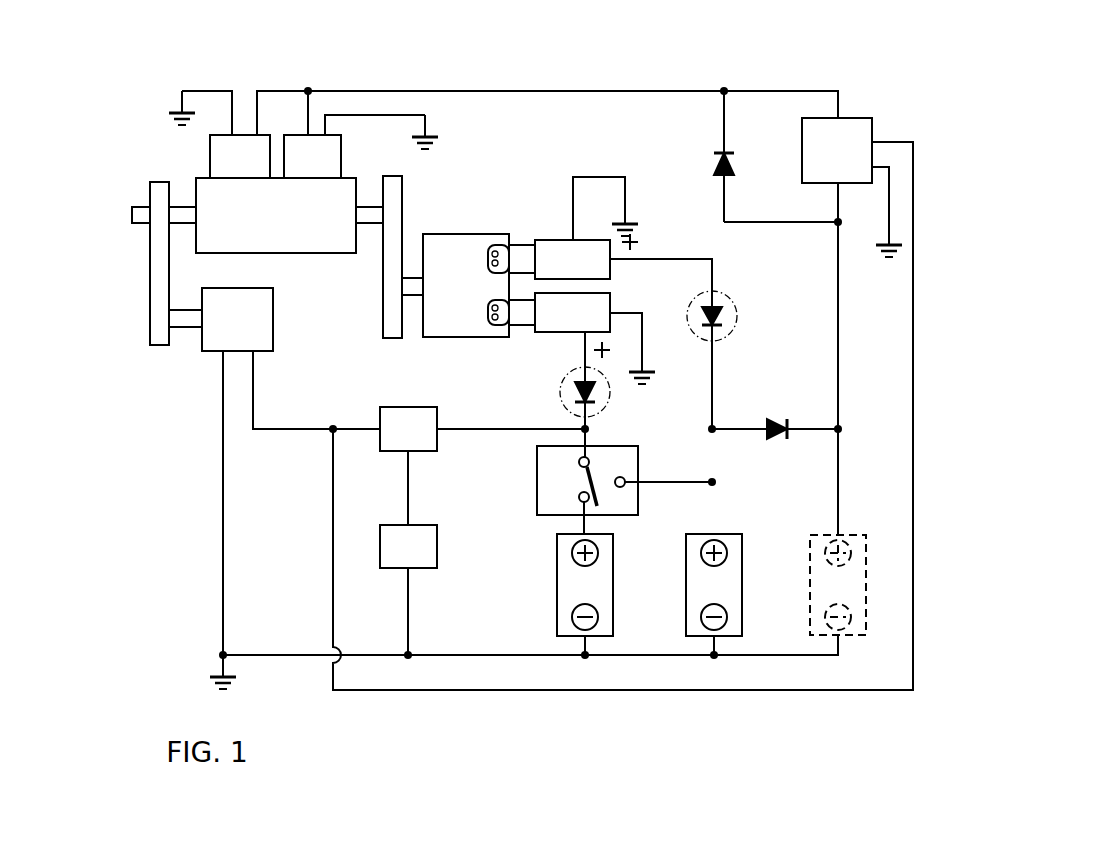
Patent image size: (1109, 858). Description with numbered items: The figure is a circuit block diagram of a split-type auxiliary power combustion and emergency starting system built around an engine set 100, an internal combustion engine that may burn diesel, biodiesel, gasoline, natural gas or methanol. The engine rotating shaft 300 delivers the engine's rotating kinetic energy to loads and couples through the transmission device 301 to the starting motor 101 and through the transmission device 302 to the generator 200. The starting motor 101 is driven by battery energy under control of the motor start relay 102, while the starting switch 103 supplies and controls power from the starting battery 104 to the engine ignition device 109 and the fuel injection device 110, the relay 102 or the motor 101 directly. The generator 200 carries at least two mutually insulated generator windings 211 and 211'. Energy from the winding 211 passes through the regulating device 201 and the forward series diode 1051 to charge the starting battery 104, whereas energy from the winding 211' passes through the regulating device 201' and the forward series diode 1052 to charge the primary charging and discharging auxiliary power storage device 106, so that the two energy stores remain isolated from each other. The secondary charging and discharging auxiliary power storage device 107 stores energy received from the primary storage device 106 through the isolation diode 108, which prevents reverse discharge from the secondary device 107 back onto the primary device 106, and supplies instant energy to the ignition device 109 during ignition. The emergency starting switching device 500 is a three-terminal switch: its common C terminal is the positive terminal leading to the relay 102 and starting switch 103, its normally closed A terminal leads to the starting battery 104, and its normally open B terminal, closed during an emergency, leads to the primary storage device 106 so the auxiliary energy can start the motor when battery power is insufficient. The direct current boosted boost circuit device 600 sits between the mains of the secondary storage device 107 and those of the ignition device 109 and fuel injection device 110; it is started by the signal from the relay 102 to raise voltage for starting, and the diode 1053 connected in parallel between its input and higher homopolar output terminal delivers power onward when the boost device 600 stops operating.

The engine set 100 is at (276, 215).
The starting motor 101 is at (237, 319).
The motor start relay 102 is at (408, 429).
The starting switch 103 is at (408, 546).
The starting battery 104 is at (585, 585).
The primary charging and discharging auxiliary power storage device 106 is at (714, 585).
The secondary charging and discharging auxiliary power storage device 107 is at (838, 585).
The isolation diode 108 is at (771, 416).
The engine ignition device 109 is at (312, 156).
The fuel injection device 110 is at (240, 156).
The generator 200 is at (466, 285).
The regulating device 201 is at (572, 312).
The regulating device 201' is at (572, 259).
The generator winding 211 is at (490, 346).
The generator winding 211' is at (496, 227).
The engine rotating shaft 300 is at (131, 217).
The transmission device 301 is at (163, 181).
The transmission device 302 is at (382, 318).
The emergency starting switching device 500 is at (536, 505).
The direct current boosted boost circuit device 600 is at (837, 150).
The diode 1051 is at (573, 398).
The diode 1052 is at (722, 318).
The diode 1053 is at (713, 170).